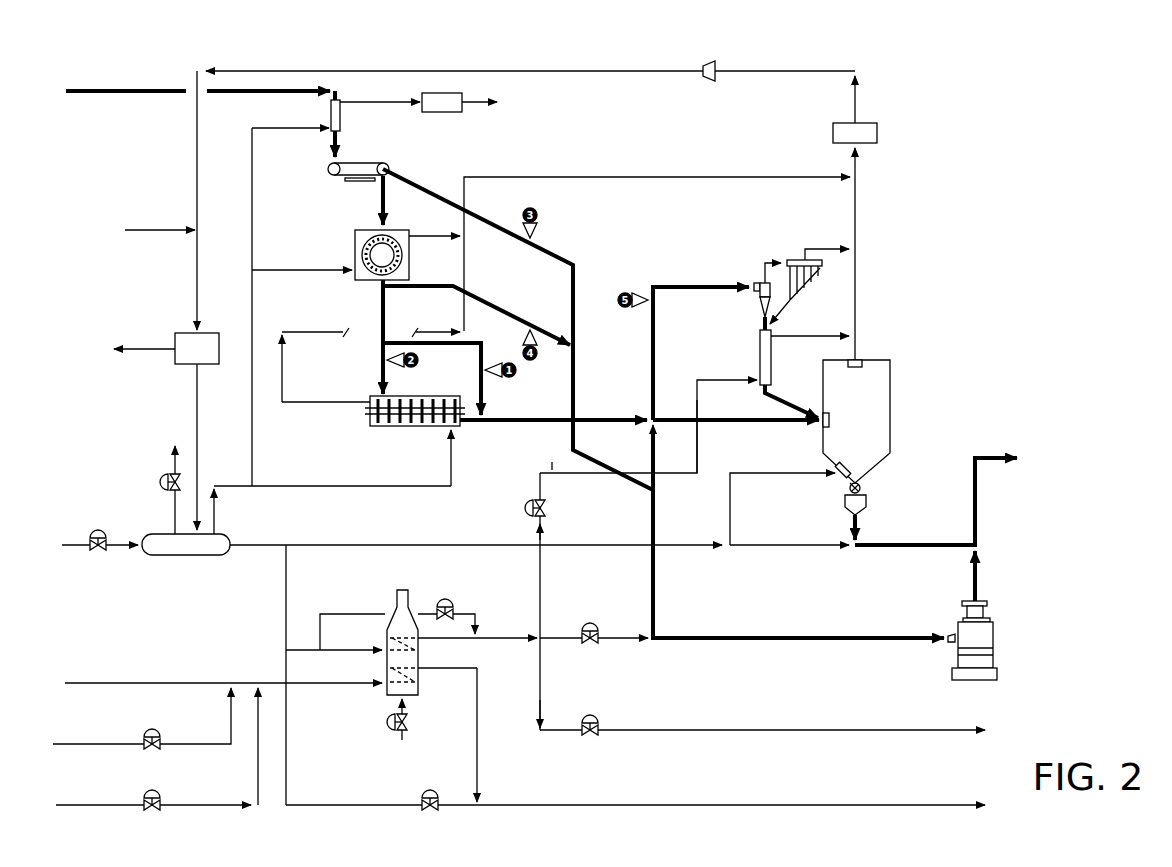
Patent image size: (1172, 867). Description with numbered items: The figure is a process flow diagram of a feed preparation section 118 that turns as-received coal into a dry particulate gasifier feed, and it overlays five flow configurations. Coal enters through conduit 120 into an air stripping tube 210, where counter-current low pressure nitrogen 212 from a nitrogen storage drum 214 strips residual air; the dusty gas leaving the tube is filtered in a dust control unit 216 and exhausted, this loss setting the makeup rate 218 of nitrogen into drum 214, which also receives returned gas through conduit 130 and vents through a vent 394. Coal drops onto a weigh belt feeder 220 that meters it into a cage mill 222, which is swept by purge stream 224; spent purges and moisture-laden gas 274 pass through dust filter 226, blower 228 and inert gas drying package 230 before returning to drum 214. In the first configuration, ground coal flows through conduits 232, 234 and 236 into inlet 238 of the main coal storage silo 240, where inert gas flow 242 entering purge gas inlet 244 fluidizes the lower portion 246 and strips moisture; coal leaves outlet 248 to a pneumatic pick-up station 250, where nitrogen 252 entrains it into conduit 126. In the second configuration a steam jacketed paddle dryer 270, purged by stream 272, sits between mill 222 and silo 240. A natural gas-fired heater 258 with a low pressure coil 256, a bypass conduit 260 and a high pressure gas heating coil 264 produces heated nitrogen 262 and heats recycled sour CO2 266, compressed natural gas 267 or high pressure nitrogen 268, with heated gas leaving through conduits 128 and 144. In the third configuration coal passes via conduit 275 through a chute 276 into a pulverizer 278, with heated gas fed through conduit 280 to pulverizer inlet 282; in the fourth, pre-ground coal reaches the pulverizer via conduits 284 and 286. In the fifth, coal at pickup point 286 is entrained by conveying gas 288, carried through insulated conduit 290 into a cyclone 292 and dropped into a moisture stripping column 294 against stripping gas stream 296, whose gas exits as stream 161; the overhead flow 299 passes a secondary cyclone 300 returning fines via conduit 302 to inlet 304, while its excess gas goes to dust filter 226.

The feed preparation section 118 is at (951, 174).
The conduit 120 is at (143, 91).
The conduit 126 is at (988, 455).
The conduit 128 is at (891, 728).
The conduit 130 is at (170, 228).
The outlet stream 144 is at (891, 803).
The gas stream 161 is at (806, 337).
The air stripping tube 210 is at (330, 120).
The low pressure nitrogen 212 is at (255, 212).
The nitrogen storage drum 214 is at (228, 536).
The dust control unit 216 is at (447, 113).
The makeup rate 218 is at (82, 543).
The weigh belt feeder 220 is at (364, 162).
The cage mill 222 is at (357, 232).
The purge stream 224 is at (272, 268).
The dust filter 226 is at (838, 124).
The blower 228 is at (703, 78).
The inert gas drying package 230 is at (176, 336).
The conduit 232 is at (481, 388).
The conduit 234 is at (525, 421).
The conduit 236 is at (738, 422).
The inlet 238 is at (842, 420).
The main coal storage silo 240 is at (881, 358).
The inert gas flow 242 is at (755, 477).
The purge gas inlet 244 is at (860, 471).
The lower portion 246 is at (862, 481).
The outlet 248 is at (862, 488).
The pneumatic pick-up station 250 is at (868, 503).
The low pressure nitrogen gas 252 is at (796, 546).
The low pressure coil 256 is at (408, 636).
The natural gas-fired heater 258 is at (396, 592).
The conduit 260 is at (346, 614).
The heated nitrogen 262 is at (495, 639).
The high pressure gas heating coil 264 is at (410, 683).
The recycled sour CO2 266 is at (98, 682).
The compressed natural gas 267 is at (71, 743).
The high pressure nitrogen 268 is at (71, 804).
The steam jacketed paddle dryer 270 is at (372, 396).
The inert gas stream 272 is at (382, 486).
The moisture-laden inert gas 274 is at (302, 332).
The conduit 275 is at (548, 252).
The chute 276 is at (575, 381).
The pulverizer 278 is at (960, 622).
The conduit 280 is at (600, 640).
The pulverizer inlet 282 is at (945, 641).
The conduit 284 is at (491, 310).
The conduit 286 is at (652, 415).
The conveying gas 288 is at (650, 453).
The insulated conduit 290 is at (659, 281).
The cyclone 292 is at (757, 286).
The moisture stripping column 294 is at (758, 360).
The stripping gas stream 296 is at (700, 378).
The overhead flow 299 is at (763, 262).
The secondary cyclone 300 is at (798, 258).
The conduit 302 is at (786, 314).
The inlet 304 is at (762, 330).
The vent 394 is at (170, 458).